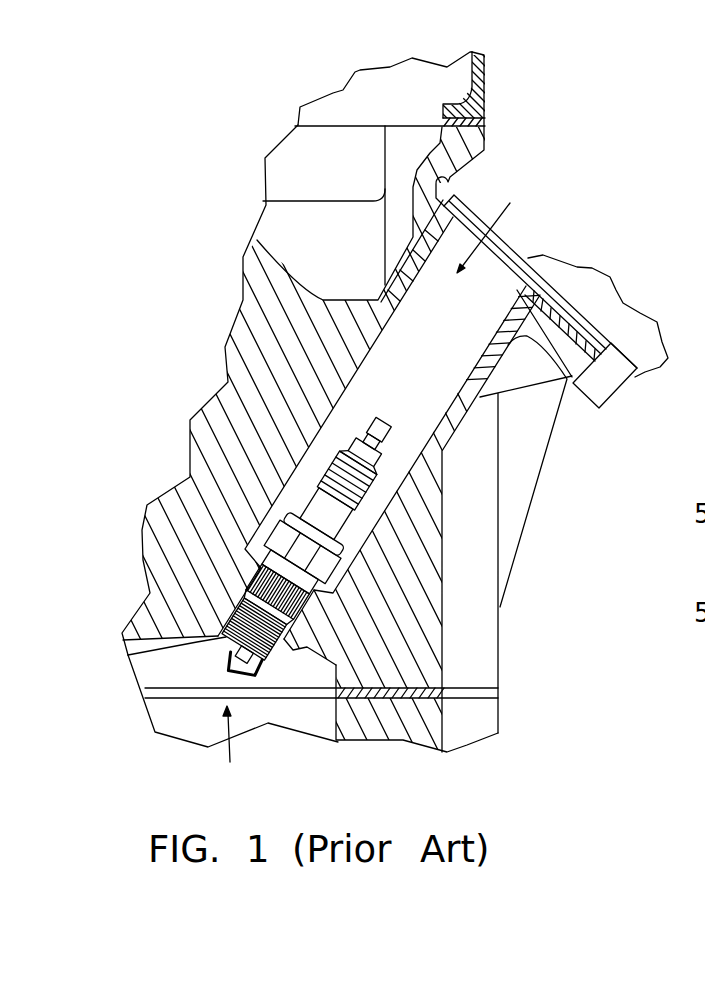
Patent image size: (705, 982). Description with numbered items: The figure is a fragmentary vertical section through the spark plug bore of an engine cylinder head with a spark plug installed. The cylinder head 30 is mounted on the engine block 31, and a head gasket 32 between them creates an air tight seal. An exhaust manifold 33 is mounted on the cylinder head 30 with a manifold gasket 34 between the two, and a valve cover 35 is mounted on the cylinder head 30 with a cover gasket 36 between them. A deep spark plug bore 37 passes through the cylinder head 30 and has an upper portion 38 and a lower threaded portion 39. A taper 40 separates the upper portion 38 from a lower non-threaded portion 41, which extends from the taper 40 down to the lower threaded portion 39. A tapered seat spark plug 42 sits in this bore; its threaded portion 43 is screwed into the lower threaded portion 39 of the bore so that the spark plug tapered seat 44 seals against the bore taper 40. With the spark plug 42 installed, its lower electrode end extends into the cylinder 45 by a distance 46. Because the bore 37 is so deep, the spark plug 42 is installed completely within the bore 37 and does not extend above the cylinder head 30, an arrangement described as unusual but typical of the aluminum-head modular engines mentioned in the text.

The cylinder head 30 is at (417, 546).
The engine block 31 is at (373, 735).
The head gasket 32 is at (493, 693).
The exhaust manifold 33 is at (650, 374).
The manifold gasket 34 is at (630, 390).
The valve cover 35 is at (486, 82).
The cover gasket 36 is at (484, 122).
The spark plug bore 37 is at (498, 225).
The upper portion 38 is at (488, 286).
The lower threaded portion 39 is at (293, 656).
The taper 40 is at (258, 562).
The lower non-threaded portion 41 is at (207, 621).
The tapered seat spark plug 42 is at (389, 427).
The threaded portion 43 is at (227, 659).
The spark plug tapered seat 44 is at (251, 590).
The cylinder 45 is at (229, 750).
The distance 46 is at (230, 655).